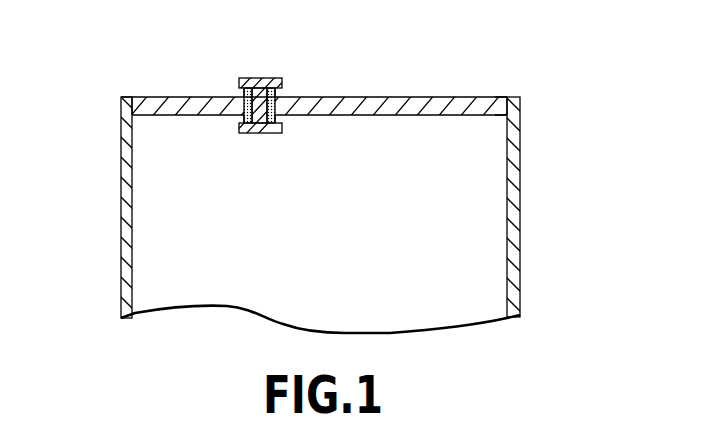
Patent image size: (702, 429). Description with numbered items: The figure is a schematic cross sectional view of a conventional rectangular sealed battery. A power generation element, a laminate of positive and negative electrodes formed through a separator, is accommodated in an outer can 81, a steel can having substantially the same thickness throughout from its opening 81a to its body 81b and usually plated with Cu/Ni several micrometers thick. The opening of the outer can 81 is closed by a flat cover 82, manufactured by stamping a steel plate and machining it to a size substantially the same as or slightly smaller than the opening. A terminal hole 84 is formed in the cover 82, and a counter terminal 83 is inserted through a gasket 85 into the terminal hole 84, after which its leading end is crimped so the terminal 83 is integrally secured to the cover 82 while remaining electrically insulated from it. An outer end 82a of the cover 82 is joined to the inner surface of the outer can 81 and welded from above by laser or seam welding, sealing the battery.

The outer can 81 is at (322, 212).
The opening 81a is at (121, 112).
The body 81b is at (121, 211).
The cover 82 is at (365, 76).
The outer end 82a is at (520, 103).
The terminal 83 is at (249, 108).
The terminal hole 84 is at (272, 133).
The gasket 85 is at (240, 117).